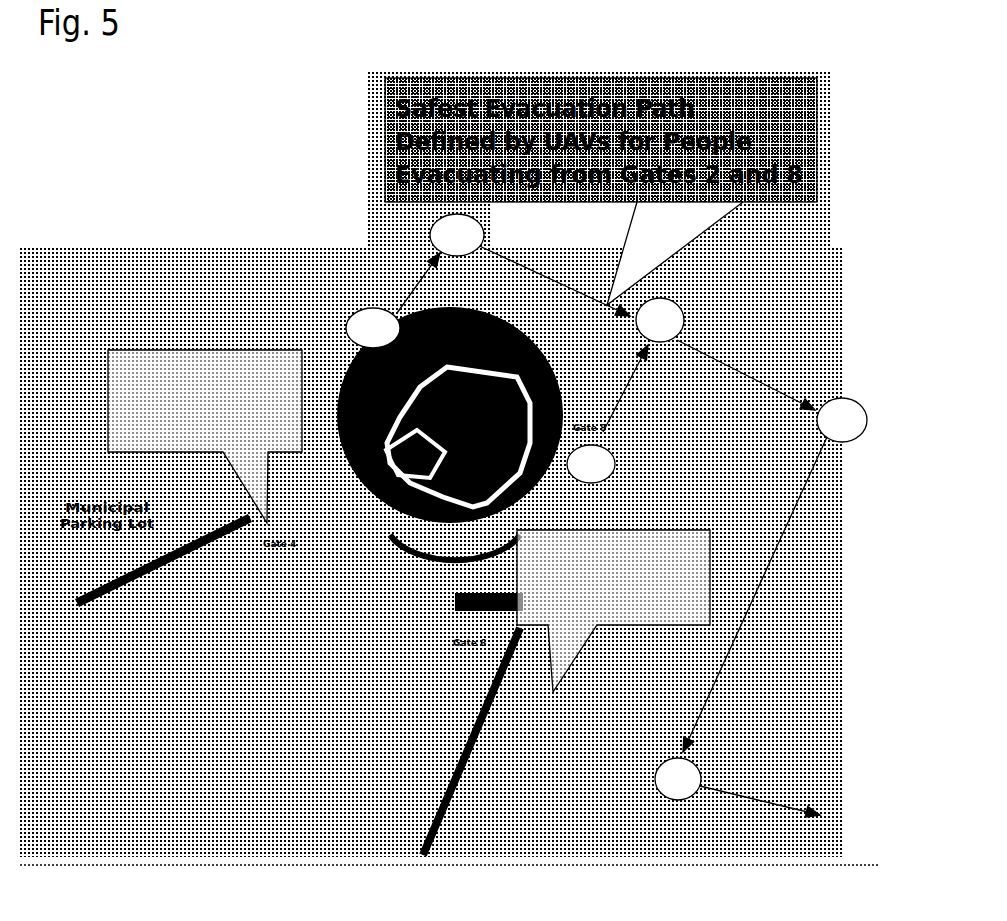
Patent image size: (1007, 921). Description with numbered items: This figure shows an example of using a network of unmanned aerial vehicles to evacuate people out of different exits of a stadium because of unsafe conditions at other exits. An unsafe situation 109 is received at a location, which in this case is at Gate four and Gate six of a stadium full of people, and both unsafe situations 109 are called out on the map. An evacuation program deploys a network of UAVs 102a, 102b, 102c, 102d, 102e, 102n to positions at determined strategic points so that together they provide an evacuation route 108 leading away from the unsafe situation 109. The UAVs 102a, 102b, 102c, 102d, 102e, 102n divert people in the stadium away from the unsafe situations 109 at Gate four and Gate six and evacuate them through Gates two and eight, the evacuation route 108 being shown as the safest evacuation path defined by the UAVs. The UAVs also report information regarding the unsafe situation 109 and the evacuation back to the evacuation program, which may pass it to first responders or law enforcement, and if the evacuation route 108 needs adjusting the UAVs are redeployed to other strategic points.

The UAV 102a is at (350, 312).
The UAV 102b is at (430, 246).
The UAV 102c is at (673, 302).
The UAV 102d is at (840, 398).
The UAV 102e is at (695, 760).
The UAV 102n is at (613, 453).
The evacuation route 108 is at (397, 302).
The unsafe situation 109 is at (287, 548).